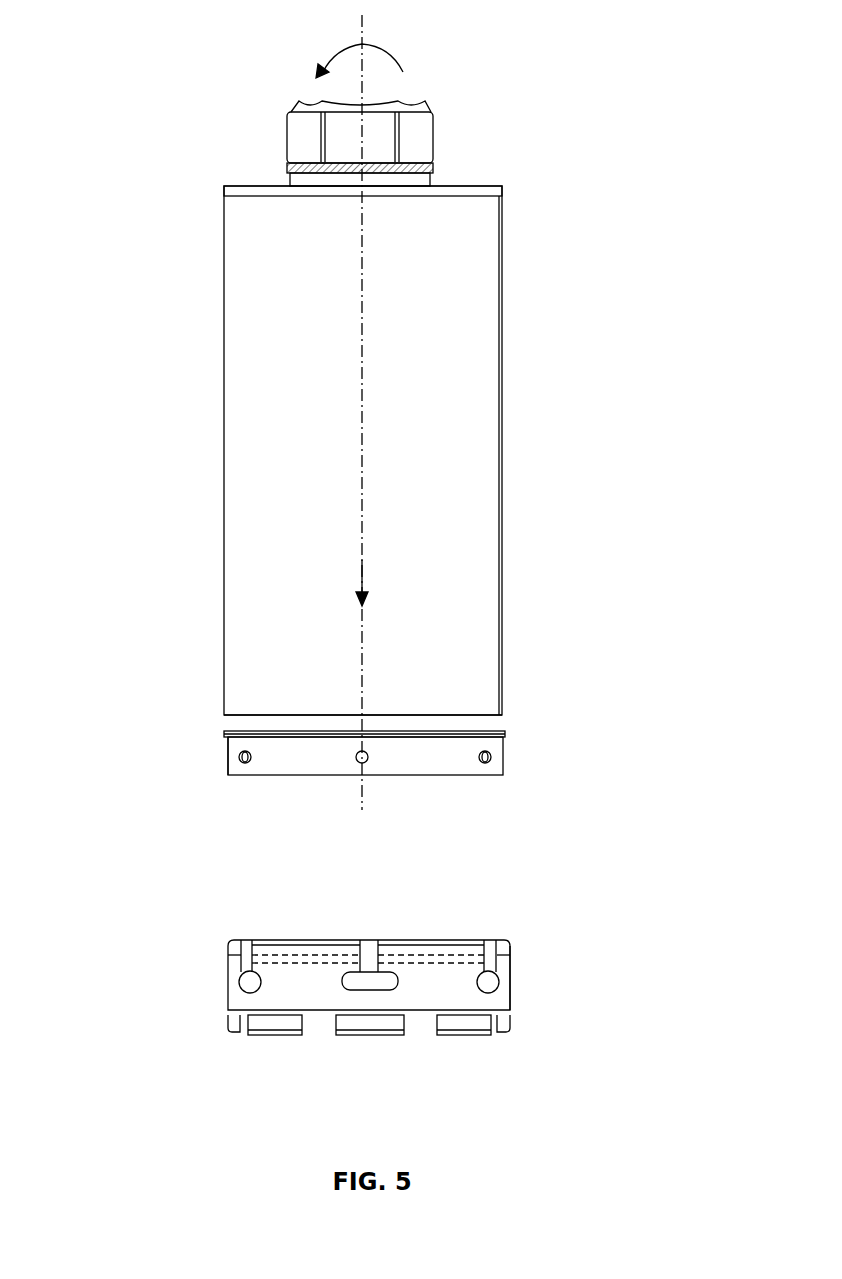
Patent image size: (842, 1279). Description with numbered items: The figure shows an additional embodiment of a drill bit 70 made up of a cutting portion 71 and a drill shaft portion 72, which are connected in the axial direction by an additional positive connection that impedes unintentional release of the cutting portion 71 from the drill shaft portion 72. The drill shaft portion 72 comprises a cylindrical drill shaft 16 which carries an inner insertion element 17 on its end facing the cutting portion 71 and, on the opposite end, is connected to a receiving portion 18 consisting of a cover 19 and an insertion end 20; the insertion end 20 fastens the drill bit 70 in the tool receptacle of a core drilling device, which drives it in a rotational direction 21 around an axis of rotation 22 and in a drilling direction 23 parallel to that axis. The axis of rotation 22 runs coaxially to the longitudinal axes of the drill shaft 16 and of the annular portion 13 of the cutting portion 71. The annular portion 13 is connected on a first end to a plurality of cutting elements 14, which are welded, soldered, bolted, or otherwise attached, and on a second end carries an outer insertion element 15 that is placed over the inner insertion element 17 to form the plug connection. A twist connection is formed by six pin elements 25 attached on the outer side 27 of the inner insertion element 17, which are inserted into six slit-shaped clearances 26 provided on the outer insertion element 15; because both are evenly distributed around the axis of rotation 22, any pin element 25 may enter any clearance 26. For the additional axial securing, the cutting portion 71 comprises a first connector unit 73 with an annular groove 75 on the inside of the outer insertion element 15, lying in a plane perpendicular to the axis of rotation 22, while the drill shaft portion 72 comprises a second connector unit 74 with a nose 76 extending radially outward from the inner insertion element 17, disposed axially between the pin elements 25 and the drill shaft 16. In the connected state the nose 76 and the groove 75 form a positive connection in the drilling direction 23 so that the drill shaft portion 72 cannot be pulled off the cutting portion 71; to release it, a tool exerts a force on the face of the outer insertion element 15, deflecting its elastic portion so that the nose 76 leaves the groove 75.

The drill bit 70 is at (162, 108).
The drill shaft portion 72 is at (100, 382).
The cutting portion 71 is at (105, 950).
The receiving portion 18 is at (615, 132).
The cover 19 is at (246, 188).
The insertion end 20 is at (435, 135).
The rotational direction 21 is at (359, 64).
The axis of rotation 22 is at (364, 300).
The drilling direction 23 is at (366, 562).
The drill shaft 16 is at (492, 427).
The second connector unit 74 is at (482, 728).
The nose 76 is at (277, 734).
The outer side 27 is at (222, 750).
The inner insertion element 17 is at (503, 748).
The pin elements 25 is at (245, 764).
The slit-shaped clearances 26 is at (247, 944).
The groove 75 is at (300, 960).
The first connector unit 73 is at (421, 955).
The outer insertion element 15 is at (512, 975).
The annular portion 13 is at (237, 1003).
The cutting elements 14 is at (237, 1032).